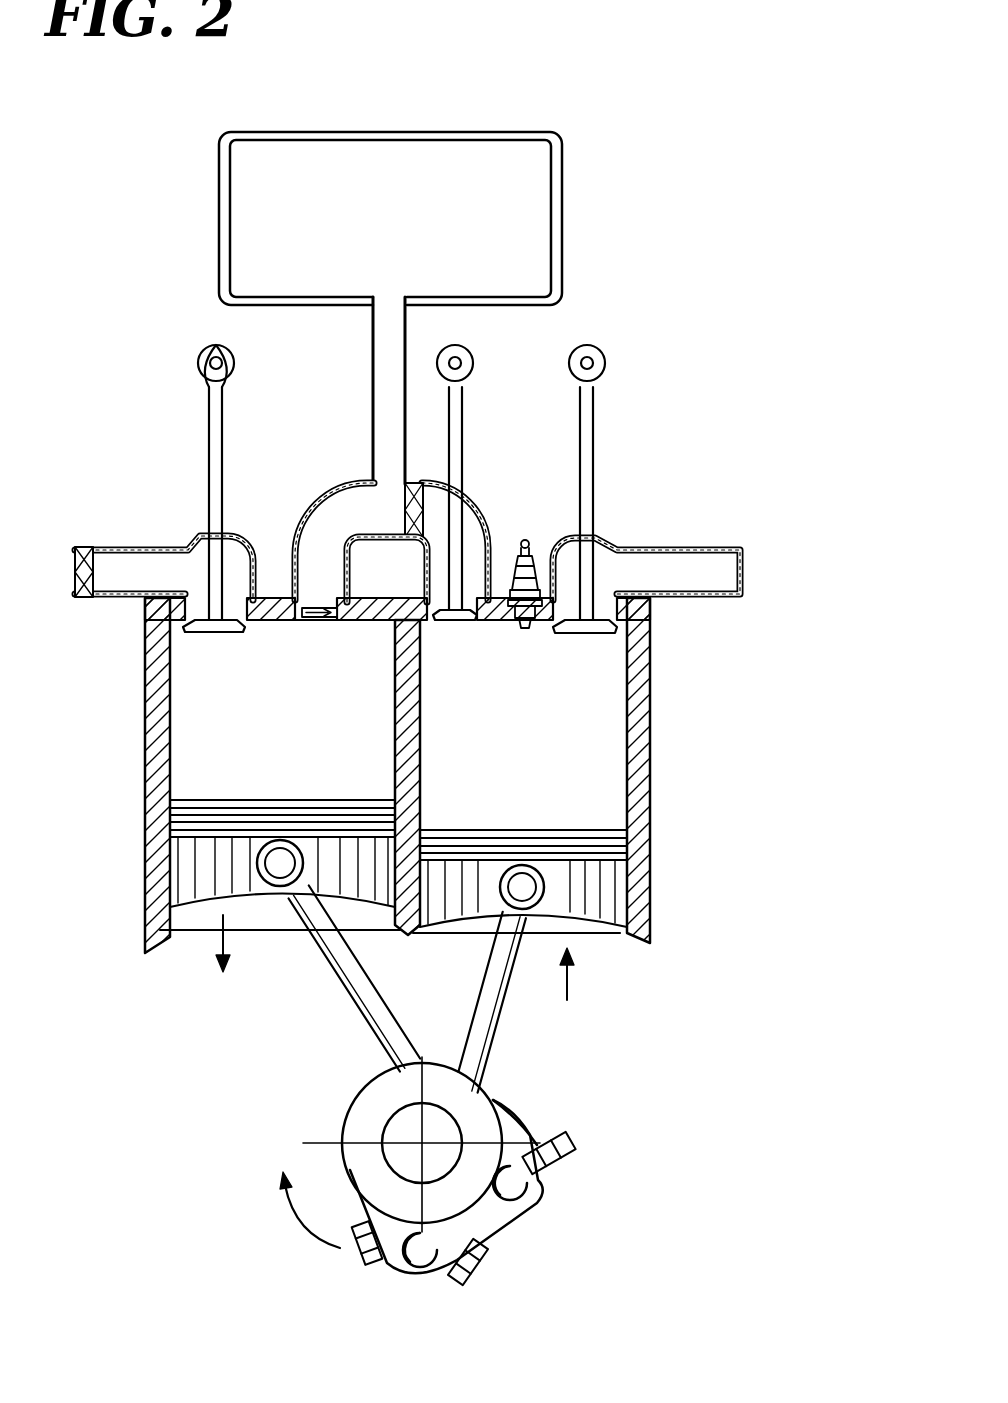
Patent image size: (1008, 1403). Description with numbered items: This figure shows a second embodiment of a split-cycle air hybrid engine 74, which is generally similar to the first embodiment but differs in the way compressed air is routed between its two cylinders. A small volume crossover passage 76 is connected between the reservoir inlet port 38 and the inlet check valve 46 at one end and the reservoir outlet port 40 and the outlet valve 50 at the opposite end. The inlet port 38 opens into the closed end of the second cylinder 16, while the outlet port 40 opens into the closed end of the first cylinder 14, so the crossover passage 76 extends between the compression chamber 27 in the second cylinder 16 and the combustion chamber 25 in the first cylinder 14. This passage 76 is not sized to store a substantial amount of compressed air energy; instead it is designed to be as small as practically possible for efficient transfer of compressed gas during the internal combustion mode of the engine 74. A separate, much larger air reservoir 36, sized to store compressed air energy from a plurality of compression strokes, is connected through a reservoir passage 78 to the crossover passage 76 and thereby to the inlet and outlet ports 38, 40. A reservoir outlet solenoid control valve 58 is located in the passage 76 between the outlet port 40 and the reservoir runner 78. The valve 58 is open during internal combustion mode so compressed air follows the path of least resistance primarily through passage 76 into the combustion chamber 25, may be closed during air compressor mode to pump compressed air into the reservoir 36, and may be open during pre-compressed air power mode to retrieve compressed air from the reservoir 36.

The air reservoir 36 is at (562, 167).
The engine 74 is at (700, 252).
The reservoir passage 78 is at (373, 356).
The crossover passage 76 is at (338, 500).
The reservoir outlet solenoid control valve 58 is at (428, 527).
The reservoir inlet port 38 is at (322, 605).
The inlet check valve 46 is at (322, 614).
The reservoir outlet port 40 is at (466, 622).
The outlet valve 50 is at (445, 618).
The second cylinder 16 is at (172, 668).
The compression chamber 27 is at (225, 752).
The first cylinder 14 is at (612, 673).
The combustion chamber 25 is at (598, 757).